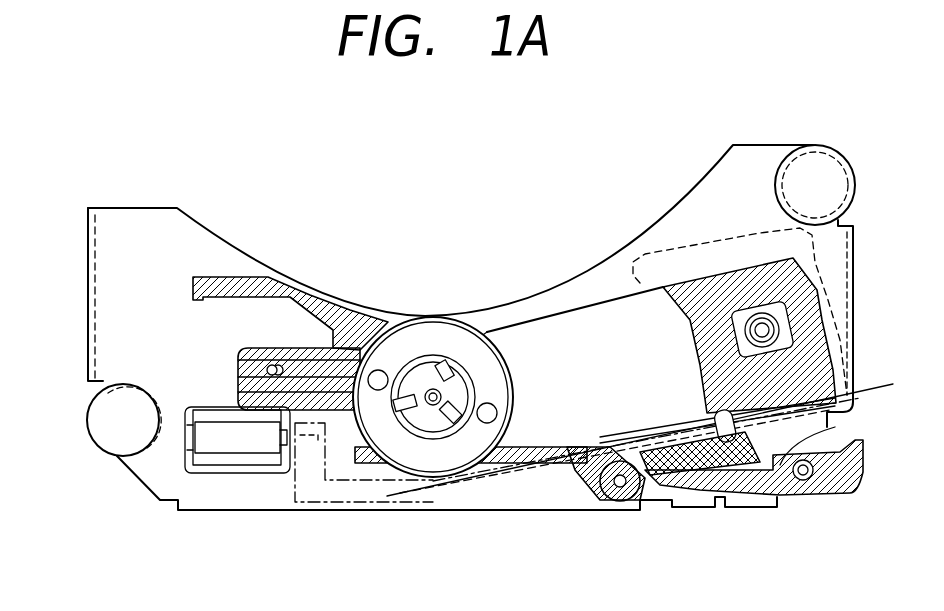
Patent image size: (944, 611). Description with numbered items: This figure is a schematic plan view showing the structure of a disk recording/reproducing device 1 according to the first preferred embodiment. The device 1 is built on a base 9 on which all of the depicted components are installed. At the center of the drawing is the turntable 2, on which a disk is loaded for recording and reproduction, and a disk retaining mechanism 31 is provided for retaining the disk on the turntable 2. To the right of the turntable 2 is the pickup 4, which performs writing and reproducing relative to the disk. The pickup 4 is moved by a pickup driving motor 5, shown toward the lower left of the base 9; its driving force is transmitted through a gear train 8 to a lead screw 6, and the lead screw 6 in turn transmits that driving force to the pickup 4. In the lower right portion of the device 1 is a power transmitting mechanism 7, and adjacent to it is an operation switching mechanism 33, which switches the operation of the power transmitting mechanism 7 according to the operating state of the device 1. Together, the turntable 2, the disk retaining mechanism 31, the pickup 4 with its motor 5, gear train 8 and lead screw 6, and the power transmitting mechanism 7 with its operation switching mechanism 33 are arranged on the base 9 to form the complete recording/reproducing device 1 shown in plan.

The disk recording/reproducing device 1 is at (126, 200).
The turntable 2 is at (398, 335).
The pickup 4 is at (713, 247).
The pickup driving motor 5 is at (267, 450).
The lead screw 6 is at (487, 450).
The power transmitting mechanism 7 is at (655, 490).
The gear train 8 is at (323, 497).
The base 9 is at (237, 267).
The disk retaining mechanism 31 is at (473, 413).
The operation switching mechanism 33 is at (703, 497).